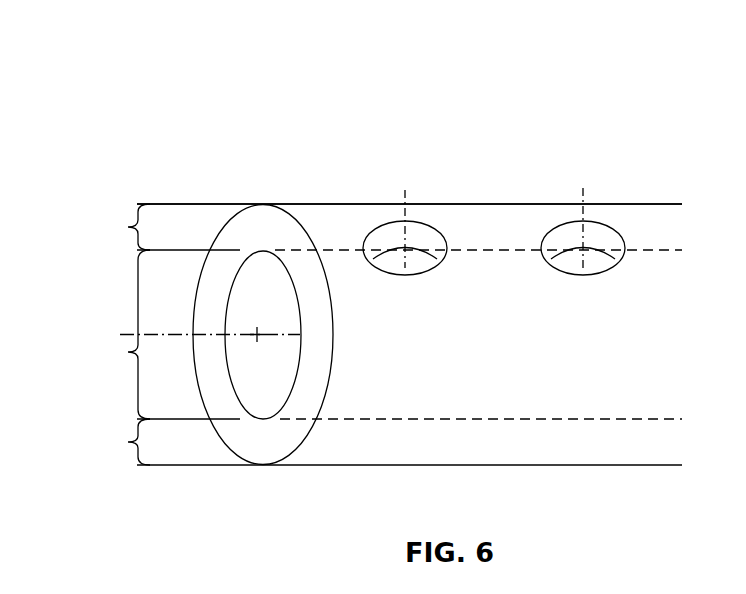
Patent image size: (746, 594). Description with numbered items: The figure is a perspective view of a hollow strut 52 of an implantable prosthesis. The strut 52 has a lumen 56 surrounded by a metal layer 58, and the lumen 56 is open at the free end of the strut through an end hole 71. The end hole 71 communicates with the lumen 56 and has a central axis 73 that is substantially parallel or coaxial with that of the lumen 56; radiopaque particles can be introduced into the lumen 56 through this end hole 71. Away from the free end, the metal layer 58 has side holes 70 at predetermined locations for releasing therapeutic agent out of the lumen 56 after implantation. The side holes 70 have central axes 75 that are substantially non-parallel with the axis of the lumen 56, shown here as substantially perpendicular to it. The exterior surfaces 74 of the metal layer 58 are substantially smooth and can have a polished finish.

The hollow strut 52 is at (487, 95).
The lumen 56 is at (116, 334).
The metal layer 58 is at (116, 334).
The side holes 70 is at (429, 230).
The end hole 71 is at (253, 306).
The central axis 73 is at (103, 333).
The exterior surfaces 74 is at (308, 203).
The central axes 75 is at (407, 196).